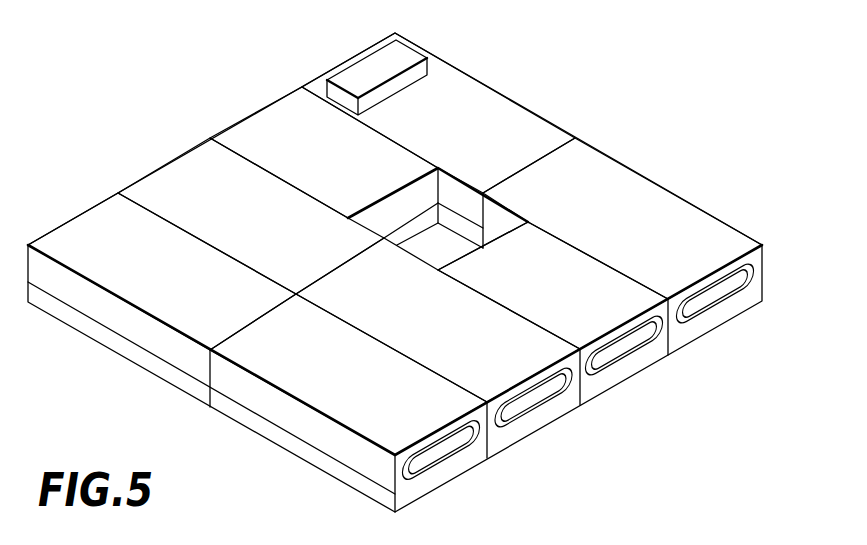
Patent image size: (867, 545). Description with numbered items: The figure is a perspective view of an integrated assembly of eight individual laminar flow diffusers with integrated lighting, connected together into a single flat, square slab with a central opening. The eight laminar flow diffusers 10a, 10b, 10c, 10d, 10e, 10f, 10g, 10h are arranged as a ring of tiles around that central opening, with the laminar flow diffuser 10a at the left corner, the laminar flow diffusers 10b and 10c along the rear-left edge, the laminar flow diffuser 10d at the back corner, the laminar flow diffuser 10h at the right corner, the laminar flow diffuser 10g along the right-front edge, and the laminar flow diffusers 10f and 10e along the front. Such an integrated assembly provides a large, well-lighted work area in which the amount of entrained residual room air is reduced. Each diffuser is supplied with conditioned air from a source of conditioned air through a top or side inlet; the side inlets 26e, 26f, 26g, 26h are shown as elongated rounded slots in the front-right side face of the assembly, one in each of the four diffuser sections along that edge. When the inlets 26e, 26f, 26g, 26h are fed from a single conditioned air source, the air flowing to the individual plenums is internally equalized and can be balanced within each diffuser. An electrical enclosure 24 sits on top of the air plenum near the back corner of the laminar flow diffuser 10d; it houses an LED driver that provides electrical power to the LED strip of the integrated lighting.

The laminar flow diffuser 10a is at (186, 278).
The laminar flow diffuser 10b is at (286, 227).
The laminar flow diffuser 10c is at (358, 171).
The laminar flow diffuser 10d is at (470, 131).
The laminar flow diffuser 10e is at (382, 394).
The laminar flow diffuser 10f is at (477, 343).
The laminar flow diffuser 10g is at (573, 299).
The laminar flow diffuser 10h is at (643, 233).
The electrical enclosure 24 is at (342, 77).
The side inlet 26e is at (442, 463).
The side inlet 26f is at (540, 410).
The side inlet 26g is at (628, 355).
The side inlet 26h is at (737, 303).